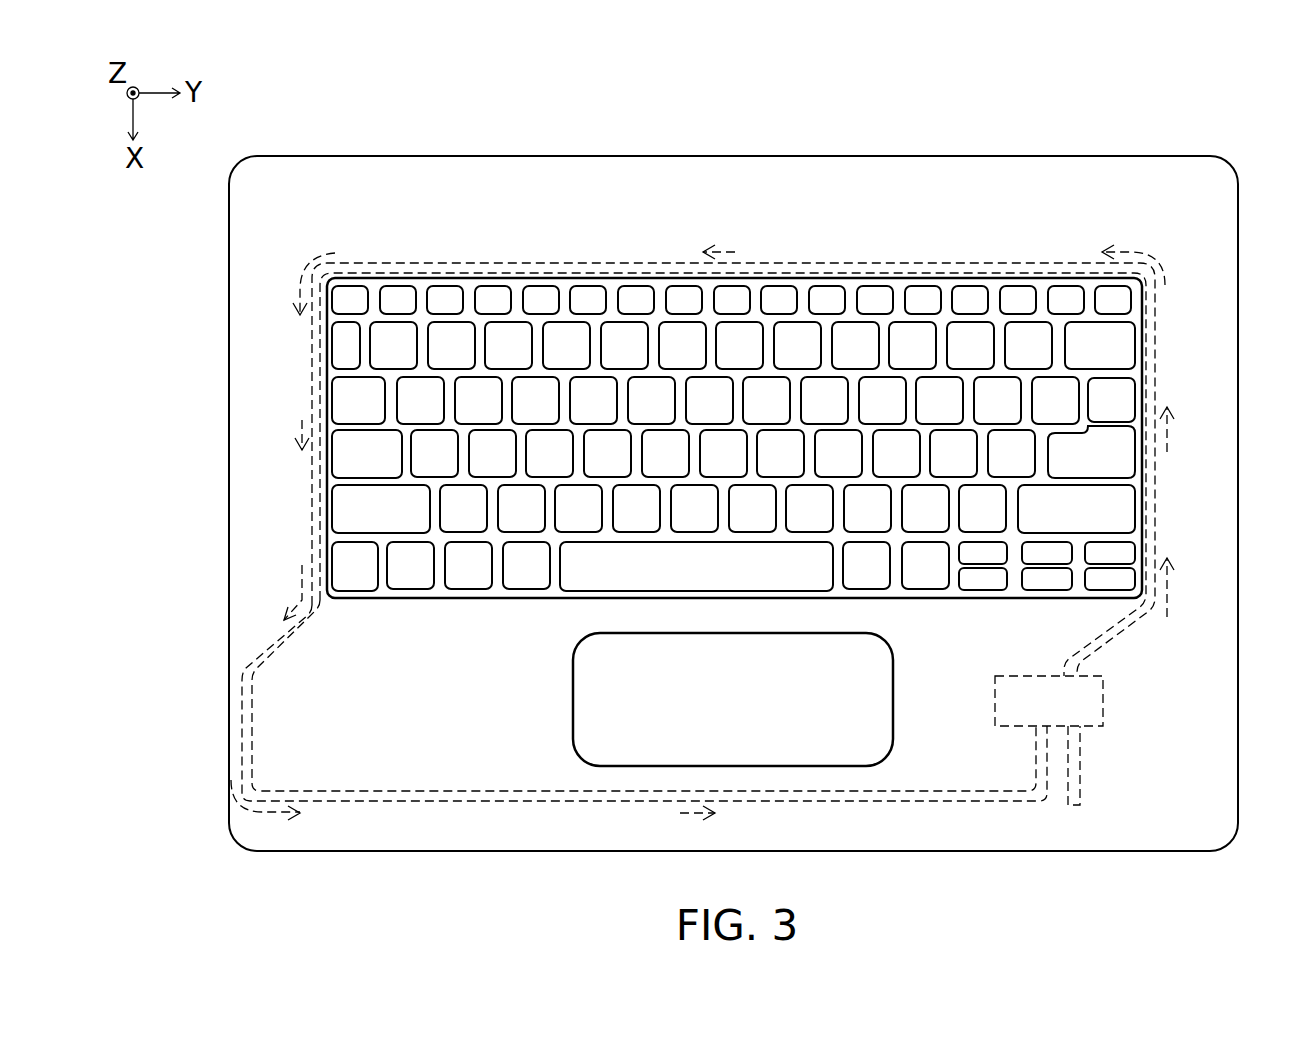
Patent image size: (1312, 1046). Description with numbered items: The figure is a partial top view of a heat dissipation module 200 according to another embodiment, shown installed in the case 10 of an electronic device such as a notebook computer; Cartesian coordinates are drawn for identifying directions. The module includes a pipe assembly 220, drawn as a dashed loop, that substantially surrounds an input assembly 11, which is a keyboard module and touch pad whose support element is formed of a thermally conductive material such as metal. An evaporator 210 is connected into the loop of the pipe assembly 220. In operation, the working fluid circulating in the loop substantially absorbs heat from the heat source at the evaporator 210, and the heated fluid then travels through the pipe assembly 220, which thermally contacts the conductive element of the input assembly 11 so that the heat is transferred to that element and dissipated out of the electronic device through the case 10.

The case 10 is at (1223, 573).
The input assembly 11 is at (470, 580).
The heat dissipation module 200 is at (718, 547).
The evaporator 210 is at (1095, 705).
The pipe assembly 220 is at (906, 270).